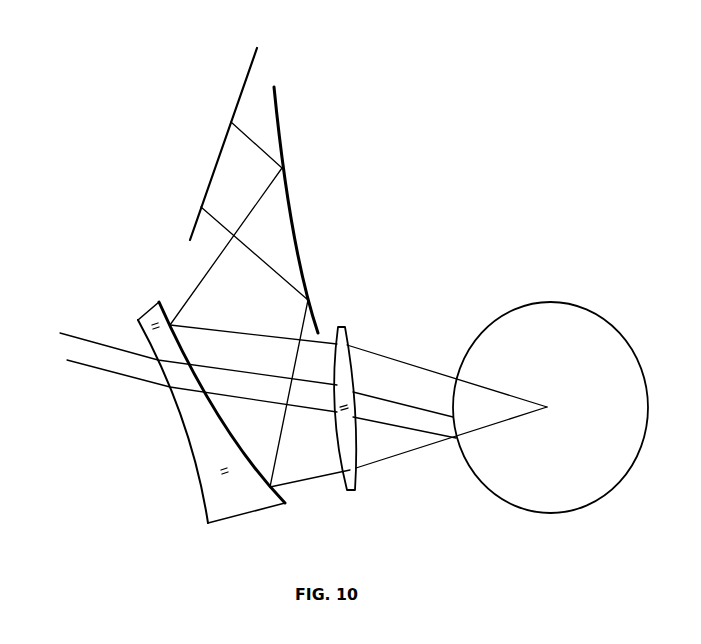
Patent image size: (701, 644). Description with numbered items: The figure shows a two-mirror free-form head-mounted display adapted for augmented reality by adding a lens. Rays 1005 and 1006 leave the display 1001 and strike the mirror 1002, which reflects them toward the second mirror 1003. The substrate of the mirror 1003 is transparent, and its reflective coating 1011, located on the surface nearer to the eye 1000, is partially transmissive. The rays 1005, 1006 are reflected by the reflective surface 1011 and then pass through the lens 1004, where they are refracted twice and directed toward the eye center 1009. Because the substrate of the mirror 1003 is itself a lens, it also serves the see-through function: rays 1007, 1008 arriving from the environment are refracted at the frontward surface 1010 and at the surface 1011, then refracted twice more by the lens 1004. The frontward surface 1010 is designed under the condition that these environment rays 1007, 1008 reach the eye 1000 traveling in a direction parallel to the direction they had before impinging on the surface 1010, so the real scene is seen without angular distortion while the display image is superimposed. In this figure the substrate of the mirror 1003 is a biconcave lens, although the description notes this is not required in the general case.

The eye 1000 is at (585, 307).
The display 1001 is at (255, 55).
The mirror 1002 is at (285, 185).
The mirror 1003 is at (217, 402).
The lens 1004 is at (343, 447).
The ray 1005 is at (248, 138).
The ray 1006 is at (212, 217).
The ray 1007 is at (75, 365).
The ray 1008 is at (66, 333).
The eye center 1009 is at (550, 403).
The frontward surface 1010 is at (213, 493).
The reflective coating 1011 is at (285, 503).